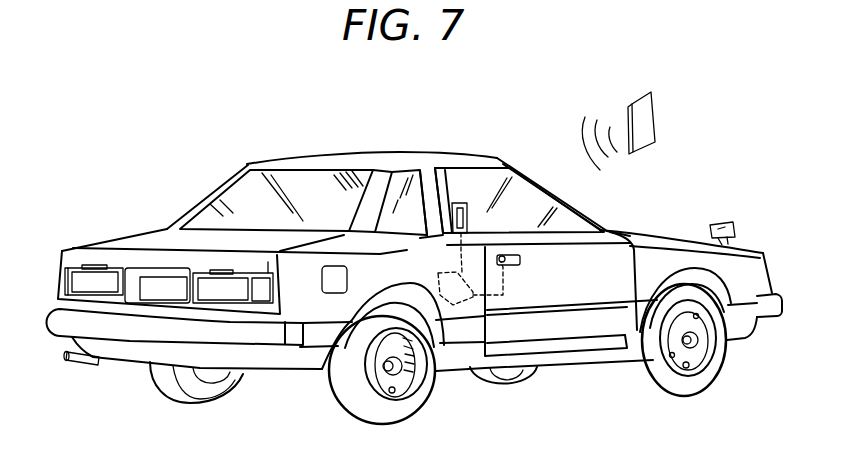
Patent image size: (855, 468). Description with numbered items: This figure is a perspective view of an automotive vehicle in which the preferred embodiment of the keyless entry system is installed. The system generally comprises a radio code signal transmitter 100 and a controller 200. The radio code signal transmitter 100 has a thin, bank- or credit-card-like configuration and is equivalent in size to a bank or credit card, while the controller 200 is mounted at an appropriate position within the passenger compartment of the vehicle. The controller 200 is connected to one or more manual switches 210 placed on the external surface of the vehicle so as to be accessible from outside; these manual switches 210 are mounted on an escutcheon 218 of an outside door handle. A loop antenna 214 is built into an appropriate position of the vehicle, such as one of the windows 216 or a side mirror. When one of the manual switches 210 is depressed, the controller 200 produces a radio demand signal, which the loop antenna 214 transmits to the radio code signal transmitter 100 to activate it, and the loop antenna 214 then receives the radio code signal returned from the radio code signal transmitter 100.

The radio code signal transmitter 100 is at (655, 122).
The controller 200 is at (438, 273).
The manual switches 210 is at (502, 255).
The loop antenna 214 is at (470, 207).
The windows 216 is at (449, 180).
The escutcheon 218 is at (520, 264).